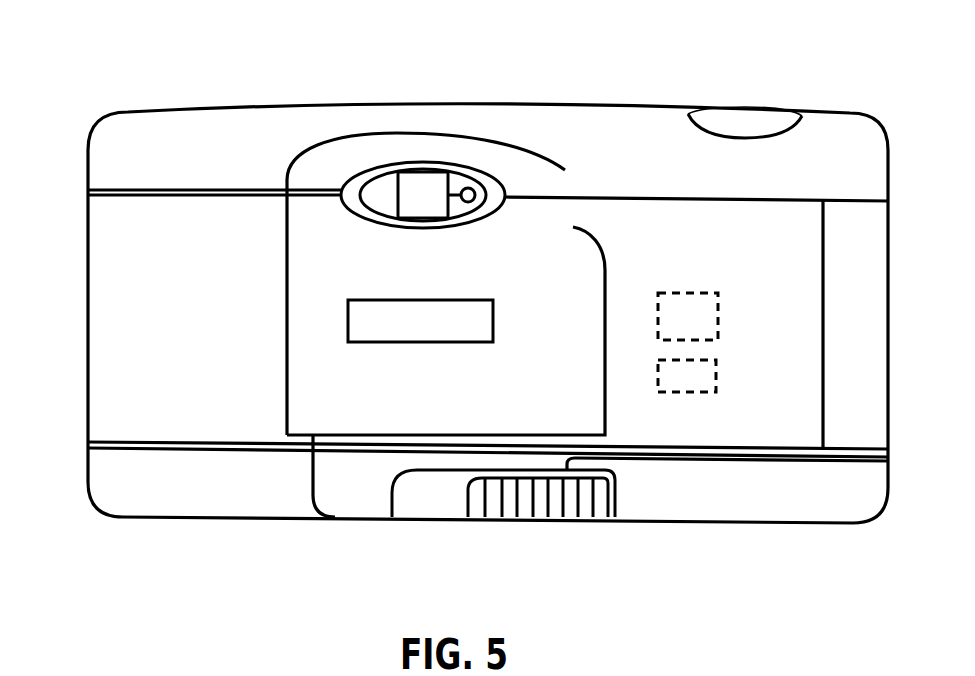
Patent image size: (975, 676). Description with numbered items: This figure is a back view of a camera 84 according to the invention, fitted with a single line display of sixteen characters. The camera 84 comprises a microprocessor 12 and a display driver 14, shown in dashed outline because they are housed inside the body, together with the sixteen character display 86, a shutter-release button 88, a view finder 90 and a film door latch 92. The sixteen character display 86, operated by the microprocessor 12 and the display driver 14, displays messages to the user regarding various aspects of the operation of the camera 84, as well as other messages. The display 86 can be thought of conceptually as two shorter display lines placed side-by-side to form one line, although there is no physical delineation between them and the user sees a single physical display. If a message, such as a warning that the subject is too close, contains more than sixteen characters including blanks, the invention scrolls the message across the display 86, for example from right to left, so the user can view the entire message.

The camera 84 is at (130, 72).
The 16 character display 86 is at (392, 320).
The shutter-release button 88 is at (726, 120).
The view finder 90 is at (418, 182).
The film door latch 92 is at (538, 507).
The microprocessor 12 is at (717, 312).
The display driver 14 is at (716, 386).